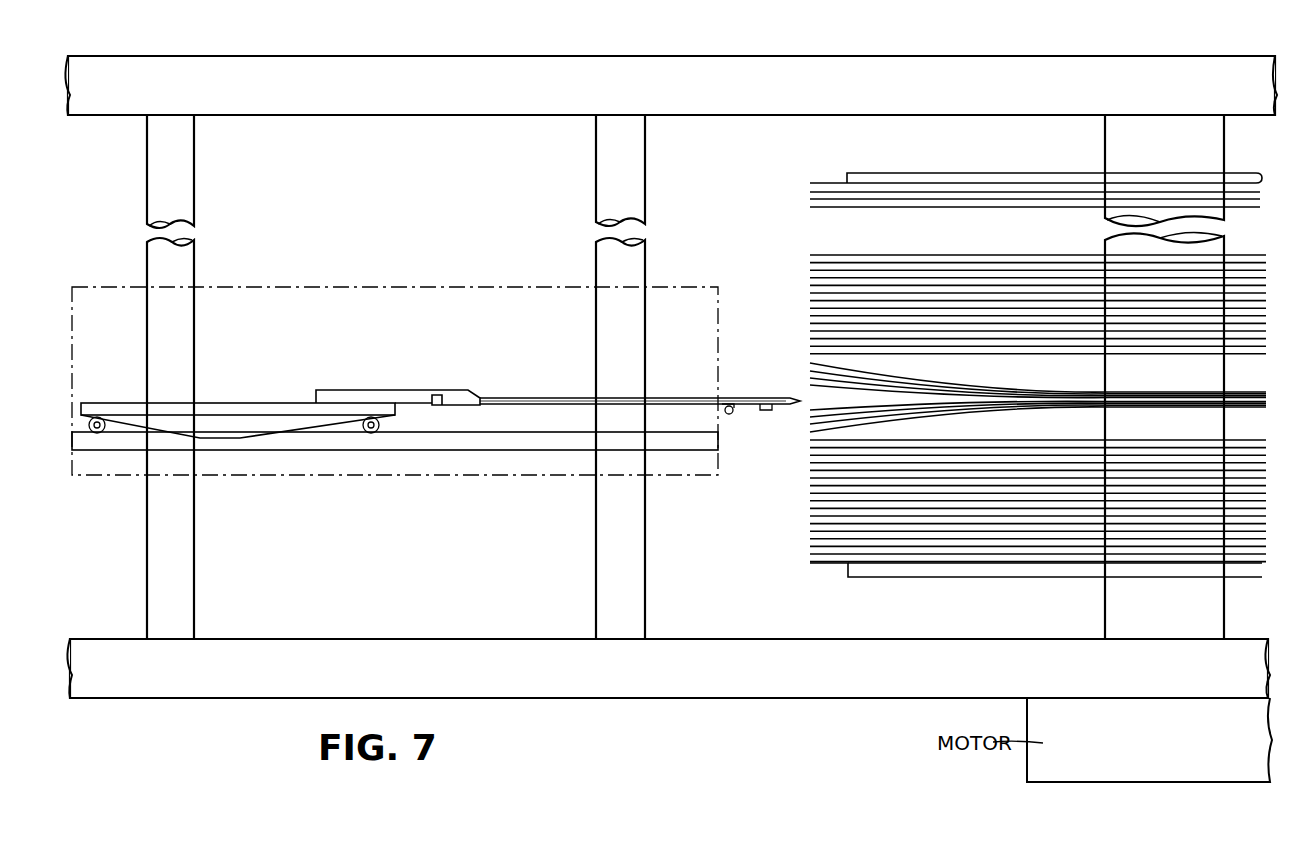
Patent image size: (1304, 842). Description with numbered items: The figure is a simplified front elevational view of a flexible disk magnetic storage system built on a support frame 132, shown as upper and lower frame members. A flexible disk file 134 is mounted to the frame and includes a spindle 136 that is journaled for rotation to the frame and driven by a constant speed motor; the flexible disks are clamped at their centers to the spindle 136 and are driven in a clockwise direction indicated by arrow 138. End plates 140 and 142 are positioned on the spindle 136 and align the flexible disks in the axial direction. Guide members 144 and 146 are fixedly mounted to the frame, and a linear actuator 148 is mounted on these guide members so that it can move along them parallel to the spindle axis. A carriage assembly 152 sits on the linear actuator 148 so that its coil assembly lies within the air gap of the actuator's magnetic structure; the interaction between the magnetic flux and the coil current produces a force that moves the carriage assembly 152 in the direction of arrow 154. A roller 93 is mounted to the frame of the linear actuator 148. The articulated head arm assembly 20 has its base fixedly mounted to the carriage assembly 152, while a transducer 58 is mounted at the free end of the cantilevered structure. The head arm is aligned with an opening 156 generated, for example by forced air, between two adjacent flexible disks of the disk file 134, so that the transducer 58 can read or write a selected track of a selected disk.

The articulated head arm assembly 20 is at (483, 394).
The transducer 58 is at (767, 412).
The roller 93 is at (731, 414).
The support frame 132 is at (372, 117).
The flexible disk file 134 is at (878, 582).
The spindle 136 is at (1212, 147).
The arrow 138 is at (1083, 125).
The end plate 140 is at (997, 563).
The end plate 142 is at (920, 182).
The guide member 144 is at (188, 572).
The guide member 146 is at (632, 580).
The linear actuator 148 is at (388, 287).
The carriage assembly 152 is at (245, 431).
The arrow 154 is at (510, 420).
The opening 156 is at (824, 394).